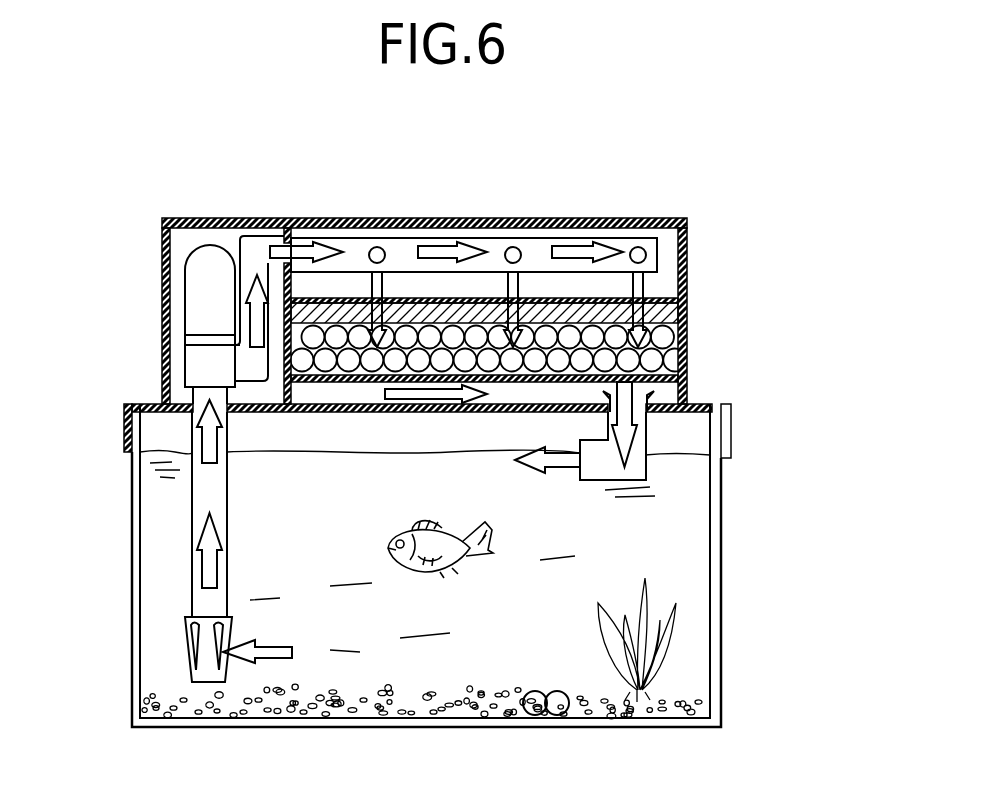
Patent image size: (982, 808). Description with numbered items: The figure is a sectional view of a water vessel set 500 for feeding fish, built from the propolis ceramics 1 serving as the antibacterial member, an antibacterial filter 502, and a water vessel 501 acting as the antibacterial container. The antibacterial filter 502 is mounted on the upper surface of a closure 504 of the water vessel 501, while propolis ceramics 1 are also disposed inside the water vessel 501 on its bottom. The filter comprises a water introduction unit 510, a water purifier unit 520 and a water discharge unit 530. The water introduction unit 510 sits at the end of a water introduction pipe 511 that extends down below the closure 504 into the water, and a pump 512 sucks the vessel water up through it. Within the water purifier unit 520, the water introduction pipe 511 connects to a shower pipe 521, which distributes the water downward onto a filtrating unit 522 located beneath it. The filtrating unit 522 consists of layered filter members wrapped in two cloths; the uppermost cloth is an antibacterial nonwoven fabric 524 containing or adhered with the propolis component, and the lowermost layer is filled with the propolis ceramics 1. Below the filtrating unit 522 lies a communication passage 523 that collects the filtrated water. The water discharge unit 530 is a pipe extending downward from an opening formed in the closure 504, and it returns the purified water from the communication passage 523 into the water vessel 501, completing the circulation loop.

The water vessel set 500 is at (782, 323).
The water vessel 501 is at (725, 535).
The antibacterial filter 502 is at (163, 328).
The closure 504 is at (124, 410).
The water introduction unit 510 is at (185, 640).
The water introduction pipe 511 is at (192, 555).
The pump 512 is at (195, 276).
The water purifier unit 520 is at (464, 219).
The shower pipe 521 is at (537, 246).
The filtrating unit 522 is at (684, 332).
The communication passage 523 is at (668, 397).
The antibacterial nonwoven fabric 524 is at (666, 296).
The water discharge unit 530 is at (647, 475).
The propolis ceramics 1 is at (670, 360).